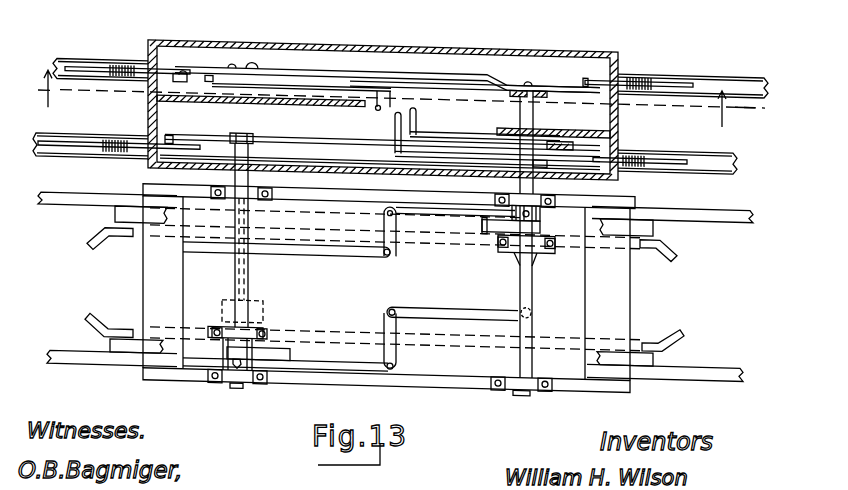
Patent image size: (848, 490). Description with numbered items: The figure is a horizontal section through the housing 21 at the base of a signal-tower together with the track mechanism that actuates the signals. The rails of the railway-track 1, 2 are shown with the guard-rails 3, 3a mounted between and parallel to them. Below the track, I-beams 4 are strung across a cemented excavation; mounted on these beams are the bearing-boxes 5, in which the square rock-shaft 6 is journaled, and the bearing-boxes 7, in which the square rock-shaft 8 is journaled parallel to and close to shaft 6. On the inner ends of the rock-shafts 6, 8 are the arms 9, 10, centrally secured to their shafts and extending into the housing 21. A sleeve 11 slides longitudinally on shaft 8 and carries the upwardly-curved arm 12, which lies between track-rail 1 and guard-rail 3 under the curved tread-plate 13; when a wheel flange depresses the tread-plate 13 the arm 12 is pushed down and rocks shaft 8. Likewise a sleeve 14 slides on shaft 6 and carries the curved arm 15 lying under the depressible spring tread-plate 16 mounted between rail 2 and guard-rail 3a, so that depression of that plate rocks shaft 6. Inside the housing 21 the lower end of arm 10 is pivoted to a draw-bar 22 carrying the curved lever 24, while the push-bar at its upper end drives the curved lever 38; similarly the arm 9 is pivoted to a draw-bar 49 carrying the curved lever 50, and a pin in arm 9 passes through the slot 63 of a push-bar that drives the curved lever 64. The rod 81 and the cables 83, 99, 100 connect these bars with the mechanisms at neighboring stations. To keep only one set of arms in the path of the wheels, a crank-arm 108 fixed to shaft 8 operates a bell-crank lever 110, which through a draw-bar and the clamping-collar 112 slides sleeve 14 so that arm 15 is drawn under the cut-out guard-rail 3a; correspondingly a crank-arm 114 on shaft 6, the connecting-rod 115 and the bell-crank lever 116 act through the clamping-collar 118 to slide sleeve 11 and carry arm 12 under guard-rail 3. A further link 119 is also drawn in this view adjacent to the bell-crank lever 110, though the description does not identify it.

The track-rail 1 is at (735, 204).
The track-rail 2 is at (707, 349).
The guard-rail 3 is at (122, 234).
The guard-rail 3a is at (112, 324).
The I-beam 4 is at (306, 190).
The bearing-box 5 is at (209, 391).
The rock-shaft 6 is at (247, 127).
The bearing-box 7 is at (540, 184).
The rock-shaft 8 is at (531, 67).
The arm 9 is at (228, 129).
The arm 10 is at (543, 80).
The sleeve 11 is at (518, 241).
The curved arm 12 is at (502, 210).
The tread-plate 13 is at (133, 208).
The sleeve 14 is at (222, 322).
The curved arm 15 is at (280, 354).
The tread-plate 16 is at (132, 348).
The housing 21 is at (547, 36).
The draw-bar 22 is at (460, 78).
The curved lever 24 is at (341, 82).
The curved lever 38 is at (337, 70).
The draw-bar 49 is at (401, 62).
The curved lever 50 is at (414, 147).
The slot 63 is at (304, 130).
The curved lever 64 is at (477, 130).
The rod 81 is at (688, 64).
The cable 83 is at (92, 65).
The connecting rod or cable 99 is at (72, 147).
The connecting-cable 100 is at (682, 148).
The crank-arm 108 is at (497, 185).
The bell-crank lever 110 is at (297, 248).
The clamping-collar 112 is at (258, 318).
The crank-arm 114 is at (240, 383).
The connecting-rod 115 is at (328, 352).
The bell-crank lever 116 is at (465, 291).
The clamping-collar 118 is at (550, 233).
The link 119 is at (420, 200).